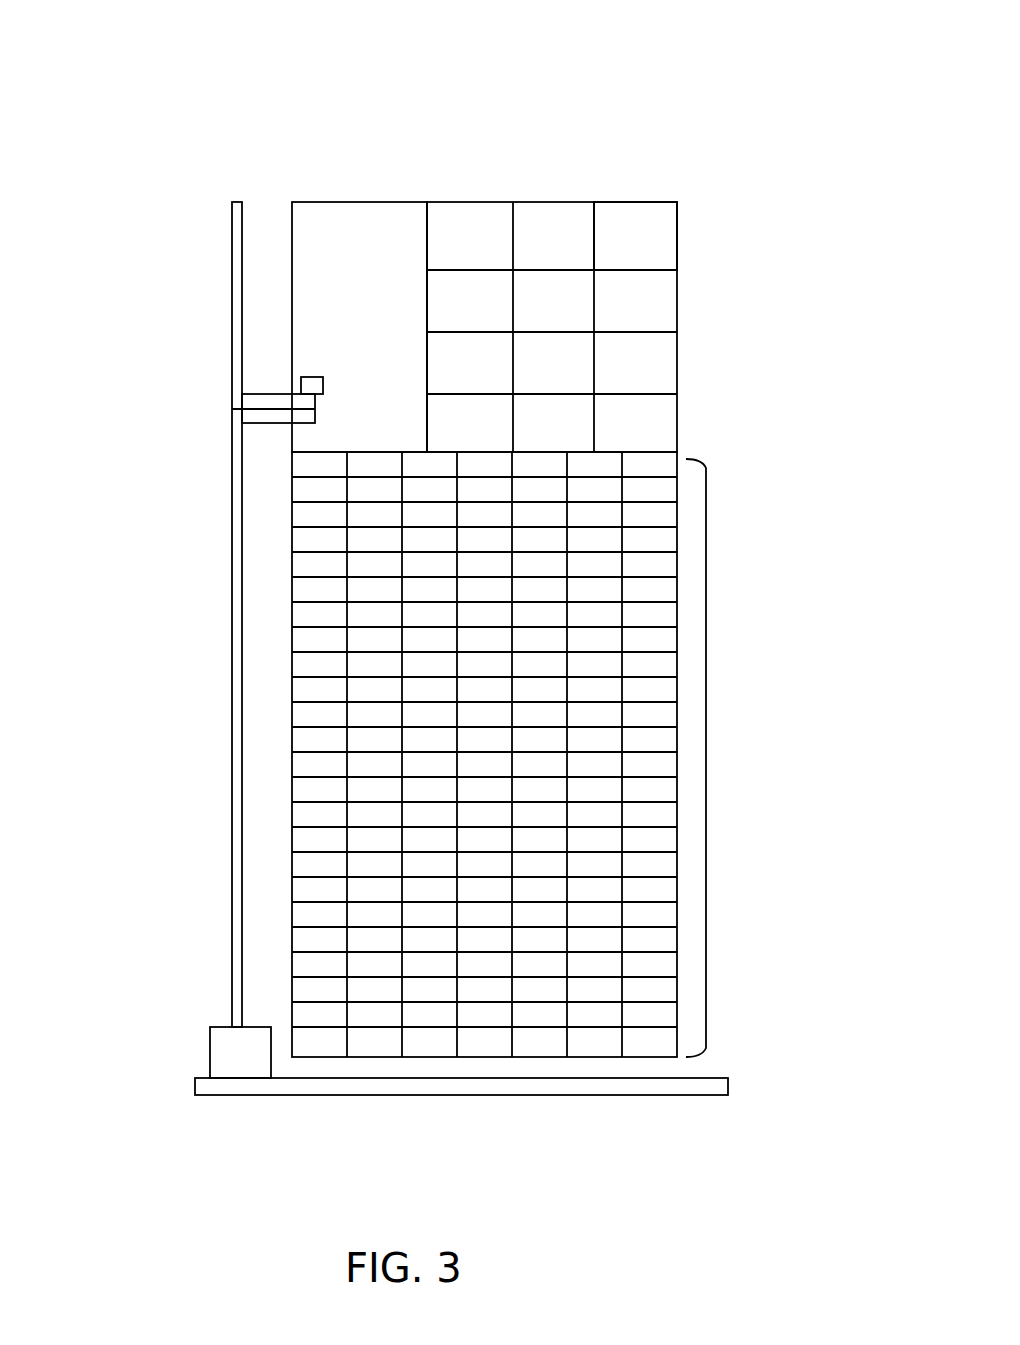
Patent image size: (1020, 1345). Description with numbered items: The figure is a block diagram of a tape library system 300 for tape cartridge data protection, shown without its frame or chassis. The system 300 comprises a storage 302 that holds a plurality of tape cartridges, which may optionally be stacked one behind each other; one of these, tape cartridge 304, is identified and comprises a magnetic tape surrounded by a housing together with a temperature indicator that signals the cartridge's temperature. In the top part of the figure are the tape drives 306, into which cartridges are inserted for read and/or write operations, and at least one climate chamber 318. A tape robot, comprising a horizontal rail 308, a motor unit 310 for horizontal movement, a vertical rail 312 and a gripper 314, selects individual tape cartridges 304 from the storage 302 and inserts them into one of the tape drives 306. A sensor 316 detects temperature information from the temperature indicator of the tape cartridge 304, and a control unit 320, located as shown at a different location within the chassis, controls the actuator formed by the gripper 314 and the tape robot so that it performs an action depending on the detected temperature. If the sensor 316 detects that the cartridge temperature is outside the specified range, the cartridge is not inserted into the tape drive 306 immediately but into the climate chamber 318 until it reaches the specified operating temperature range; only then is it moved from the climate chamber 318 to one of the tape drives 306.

The system 300 is at (94, 72).
The storage 302 is at (709, 759).
The tape cartridge 304 is at (650, 514).
The tape drive 306 is at (546, 224).
The horizontal rail 308 is at (730, 1076).
The motor unit 310 is at (230, 1049).
The vertical rail 312 is at (193, 647).
The gripper 314 is at (276, 427).
The sensor 316 is at (315, 368).
The climate chamber 318 is at (640, 224).
The control unit 320 is at (359, 327).